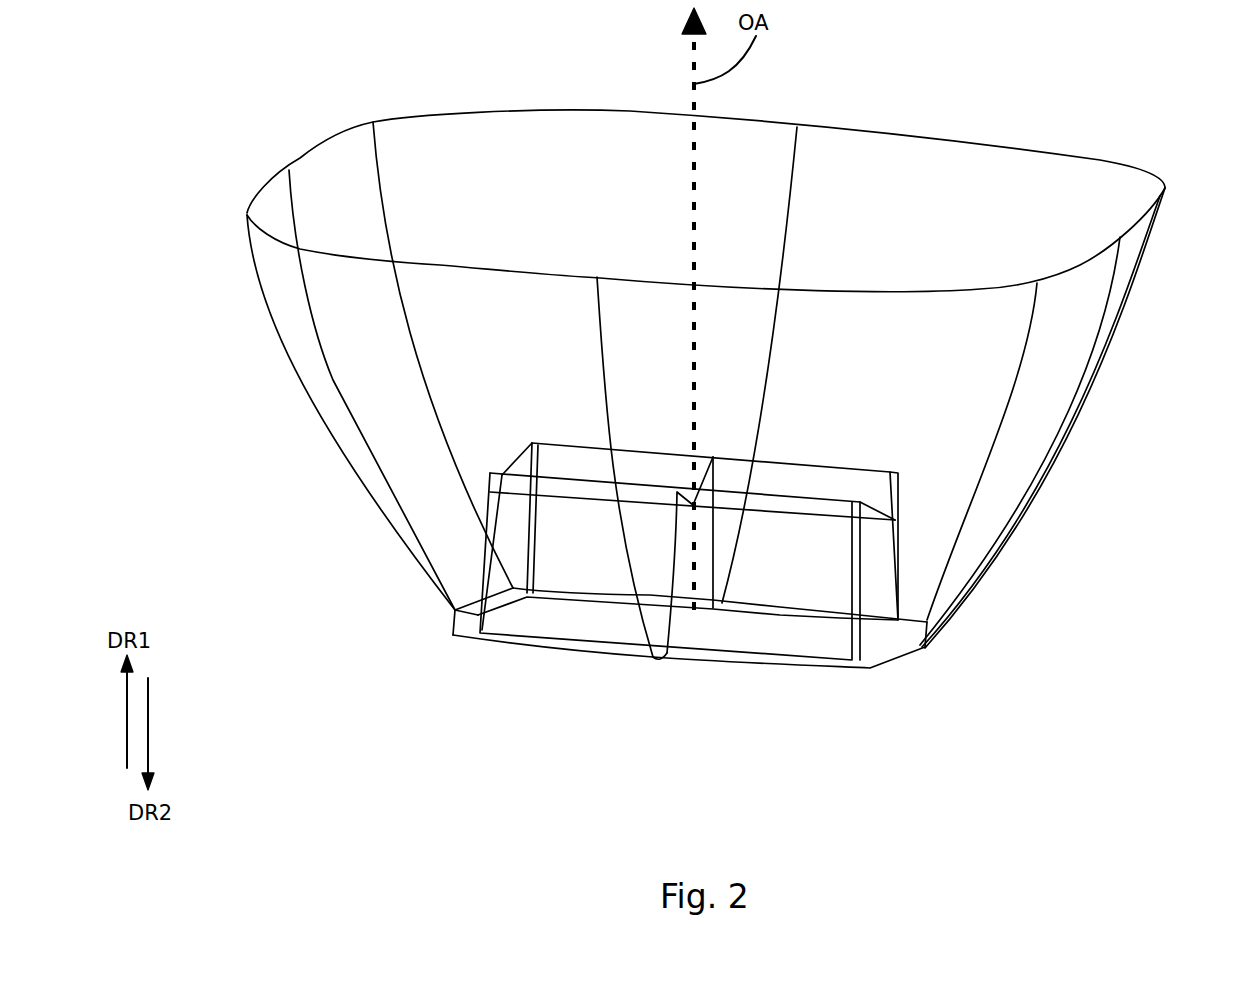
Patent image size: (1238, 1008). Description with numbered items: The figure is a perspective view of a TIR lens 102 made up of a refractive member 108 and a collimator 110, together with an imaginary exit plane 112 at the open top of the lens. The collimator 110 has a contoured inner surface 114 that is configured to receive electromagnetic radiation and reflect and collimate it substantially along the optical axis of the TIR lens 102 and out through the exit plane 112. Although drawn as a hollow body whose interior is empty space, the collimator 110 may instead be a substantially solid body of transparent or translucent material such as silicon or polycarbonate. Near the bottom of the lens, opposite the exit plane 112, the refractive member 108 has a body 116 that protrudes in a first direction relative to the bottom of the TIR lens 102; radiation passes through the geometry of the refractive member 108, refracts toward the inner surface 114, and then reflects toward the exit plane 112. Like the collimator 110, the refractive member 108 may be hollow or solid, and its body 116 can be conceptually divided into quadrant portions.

The TIR lens 102 is at (232, 108).
The refractive member 108 is at (795, 458).
The collimator 110 is at (1084, 410).
The exit plane 112 is at (823, 180).
The inner surface 114 is at (330, 185).
The body 116 is at (724, 460).